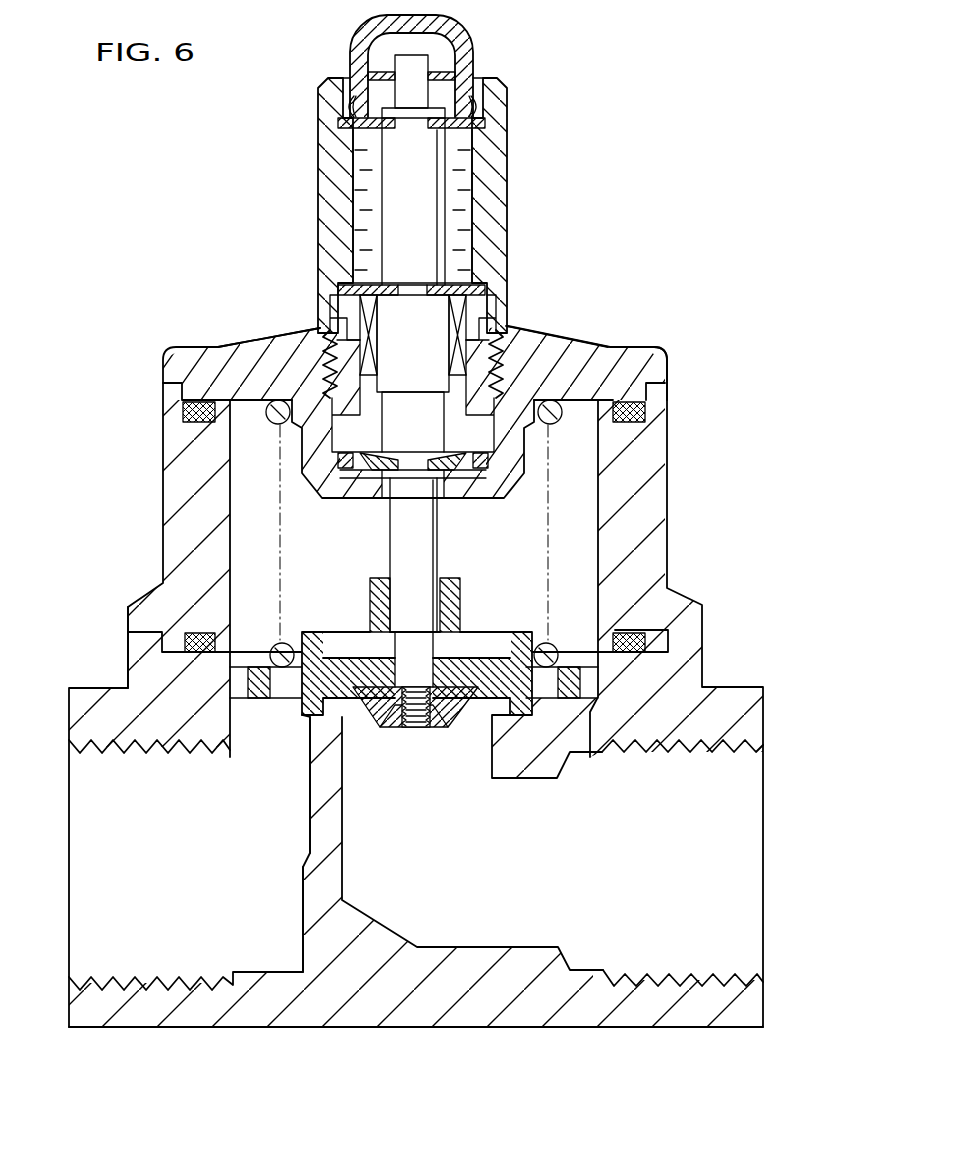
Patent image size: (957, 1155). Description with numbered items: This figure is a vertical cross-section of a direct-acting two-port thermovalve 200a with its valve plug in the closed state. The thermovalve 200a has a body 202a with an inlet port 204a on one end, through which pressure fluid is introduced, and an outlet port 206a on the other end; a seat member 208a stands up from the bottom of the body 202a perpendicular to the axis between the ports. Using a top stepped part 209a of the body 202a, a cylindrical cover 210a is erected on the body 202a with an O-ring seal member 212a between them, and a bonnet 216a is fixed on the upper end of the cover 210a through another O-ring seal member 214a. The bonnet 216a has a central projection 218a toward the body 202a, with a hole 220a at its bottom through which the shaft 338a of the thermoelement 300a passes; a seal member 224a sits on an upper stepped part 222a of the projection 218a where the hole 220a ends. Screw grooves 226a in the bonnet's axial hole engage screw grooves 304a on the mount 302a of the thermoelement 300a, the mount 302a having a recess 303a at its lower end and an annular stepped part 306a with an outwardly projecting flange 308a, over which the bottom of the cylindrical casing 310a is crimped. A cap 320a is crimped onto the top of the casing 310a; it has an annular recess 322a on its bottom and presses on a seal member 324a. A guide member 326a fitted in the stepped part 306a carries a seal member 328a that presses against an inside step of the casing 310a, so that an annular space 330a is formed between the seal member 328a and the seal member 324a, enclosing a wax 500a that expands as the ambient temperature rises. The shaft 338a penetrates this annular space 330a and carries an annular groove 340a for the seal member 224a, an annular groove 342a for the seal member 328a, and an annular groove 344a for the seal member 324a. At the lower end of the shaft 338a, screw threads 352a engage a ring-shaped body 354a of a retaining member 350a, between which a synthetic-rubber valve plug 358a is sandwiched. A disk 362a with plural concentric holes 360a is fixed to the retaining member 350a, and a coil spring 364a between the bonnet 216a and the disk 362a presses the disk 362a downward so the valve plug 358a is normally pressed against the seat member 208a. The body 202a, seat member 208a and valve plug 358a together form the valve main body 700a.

The thermovalve 200a is at (676, 527).
The body 202a is at (500, 1008).
The inlet port 204a is at (90, 795).
The outlet port 206a is at (745, 795).
The seat member 208a is at (332, 705).
The top stepped part 209a is at (652, 740).
The cover 210a is at (655, 472).
The seal member 212a is at (633, 645).
The seal member 214a is at (640, 410).
The bonnet 216a is at (655, 362).
The projection 218a is at (322, 490).
The hole 220a is at (440, 487).
The upper stepped part 222a is at (488, 455).
The seal member 224a is at (351, 463).
The screw grooves 226a is at (494, 380).
The thermoelement 300a is at (515, 176).
The mount 302a is at (327, 372).
The recess 303a is at (440, 482).
The screw grooves 304a is at (326, 356).
The stepped part 306a is at (368, 300).
The flange 308a is at (343, 310).
The casing 310a is at (320, 155).
The cap 320a is at (462, 33).
The annular recess 322a is at (352, 100).
The seal member 324a is at (486, 123).
The guide member 326a is at (464, 314).
The seal member 328a is at (487, 288).
The annular space 330a is at (466, 242).
The shaft 338a is at (420, 556).
The annular groove 340a is at (410, 468).
The annular groove 342a is at (406, 290).
The annular groove 344a is at (402, 120).
The retaining member 350a is at (458, 614).
The screw threads 352a is at (412, 730).
The ring-shaped body 354a is at (436, 716).
The valve plug 358a is at (338, 675).
The holes 360a is at (285, 690).
The disk 362a is at (575, 700).
The coil spring 364a is at (274, 423).
The wax 500a is at (364, 190).
The valve main body 700a is at (116, 648).